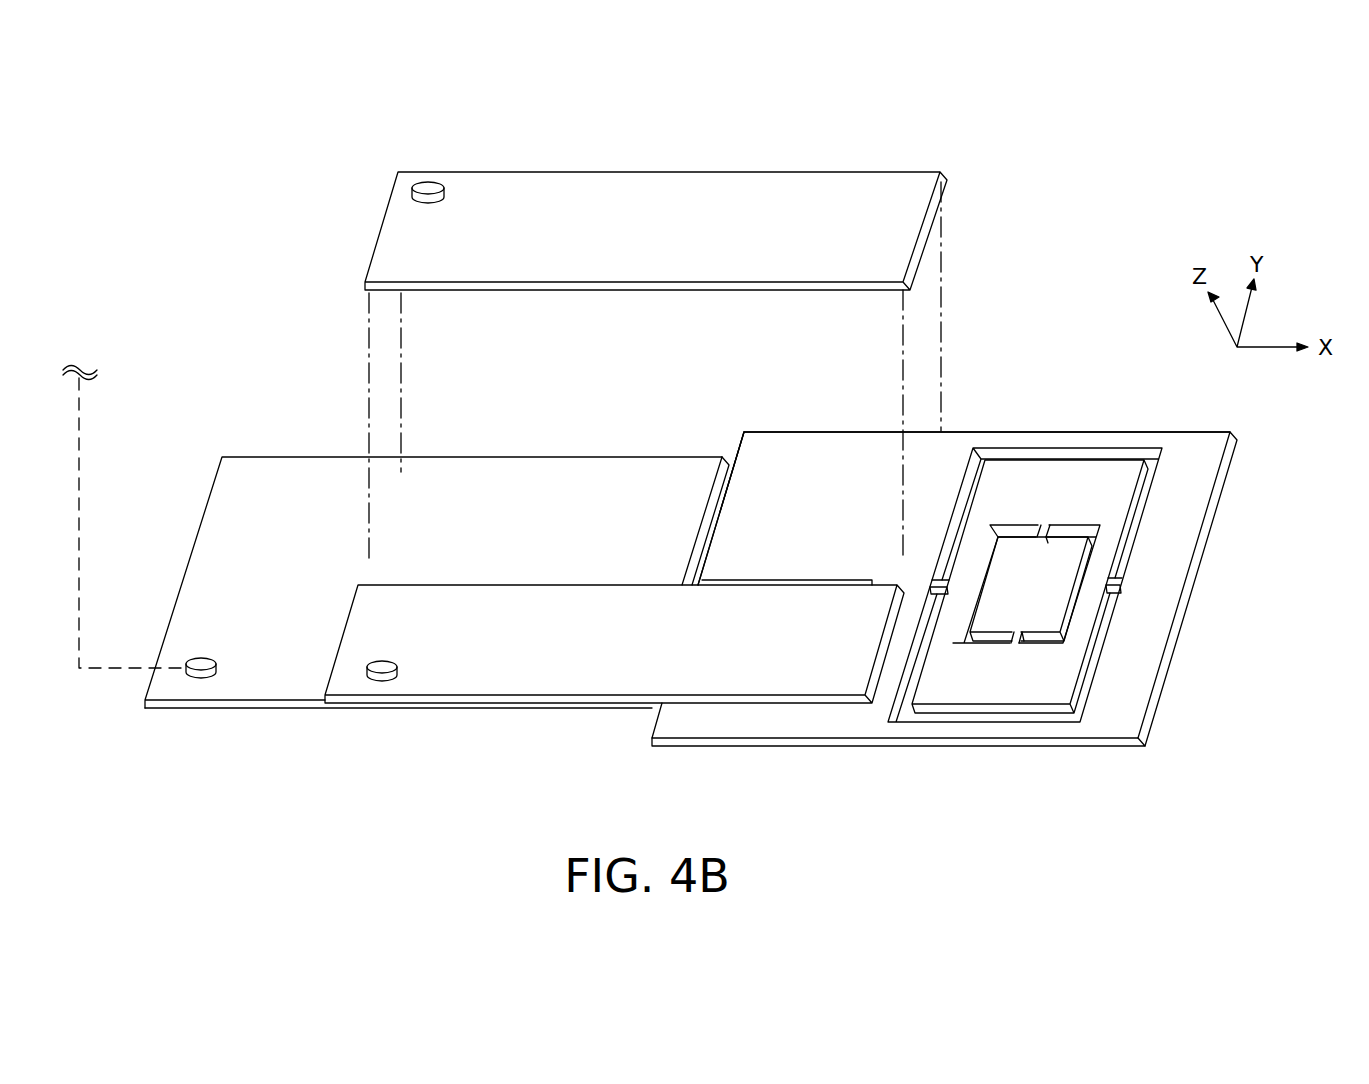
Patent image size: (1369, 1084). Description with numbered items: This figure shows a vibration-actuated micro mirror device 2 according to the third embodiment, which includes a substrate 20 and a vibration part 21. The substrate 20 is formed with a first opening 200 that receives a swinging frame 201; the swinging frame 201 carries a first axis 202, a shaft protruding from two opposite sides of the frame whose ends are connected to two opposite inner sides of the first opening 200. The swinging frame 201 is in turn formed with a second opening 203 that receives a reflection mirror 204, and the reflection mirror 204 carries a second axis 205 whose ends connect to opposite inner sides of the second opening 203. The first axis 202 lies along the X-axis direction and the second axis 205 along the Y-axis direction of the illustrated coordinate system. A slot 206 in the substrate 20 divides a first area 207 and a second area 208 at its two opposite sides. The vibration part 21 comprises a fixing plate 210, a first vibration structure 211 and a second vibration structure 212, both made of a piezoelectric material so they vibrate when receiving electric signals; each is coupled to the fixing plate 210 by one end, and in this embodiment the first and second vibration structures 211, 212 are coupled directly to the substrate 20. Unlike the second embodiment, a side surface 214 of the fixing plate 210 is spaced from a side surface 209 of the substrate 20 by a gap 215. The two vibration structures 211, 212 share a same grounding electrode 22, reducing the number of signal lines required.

The vibration-actuated micro mirror device 2 is at (206, 240).
The substrate 20 is at (766, 416).
The vibration part 21 is at (284, 444).
The grounding electrode 22 is at (206, 659).
The first opening 200 is at (1078, 453).
The swinging frame 201 is at (1122, 477).
The first axis 202 is at (936, 583).
The second opening 203 is at (1010, 537).
The reflection mirror 204 is at (1058, 585).
The second axis 205 is at (1043, 530).
The slot 206 is at (826, 580).
The first area 207 is at (847, 445).
The second area 208 is at (785, 725).
The side surface of the substrate 209 is at (740, 447).
The fixing plate 210 is at (236, 513).
The first vibration structure 211 is at (556, 183).
The second vibration structure 212 is at (505, 683).
The side surface of the fixing plate 214 is at (700, 533).
The gap 215 is at (722, 497).